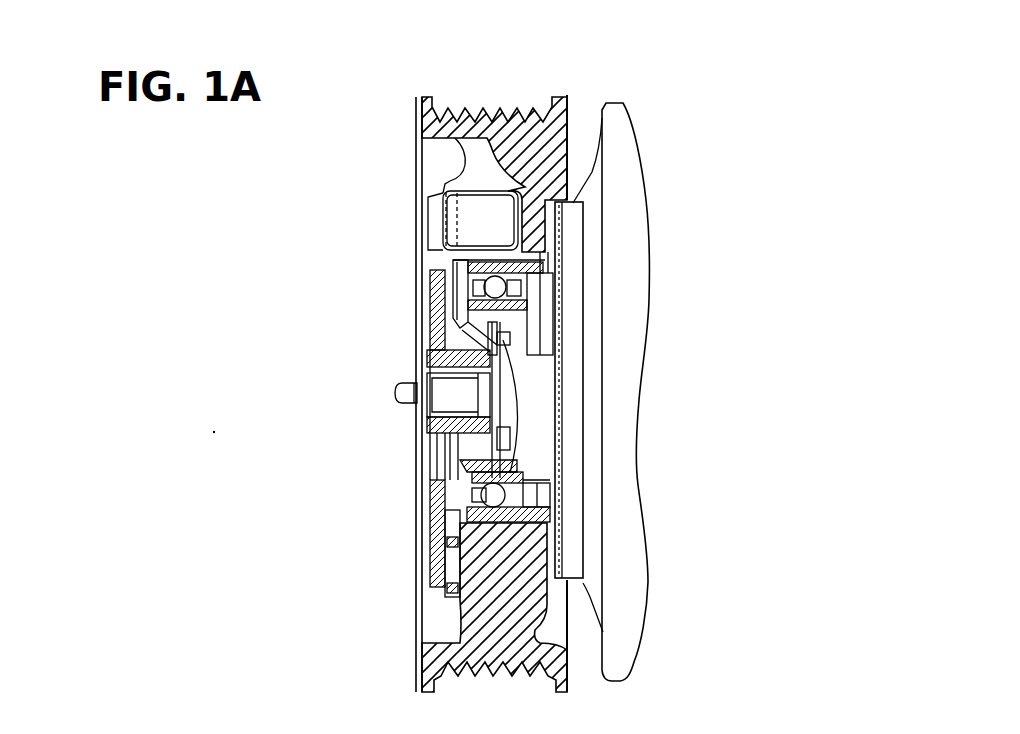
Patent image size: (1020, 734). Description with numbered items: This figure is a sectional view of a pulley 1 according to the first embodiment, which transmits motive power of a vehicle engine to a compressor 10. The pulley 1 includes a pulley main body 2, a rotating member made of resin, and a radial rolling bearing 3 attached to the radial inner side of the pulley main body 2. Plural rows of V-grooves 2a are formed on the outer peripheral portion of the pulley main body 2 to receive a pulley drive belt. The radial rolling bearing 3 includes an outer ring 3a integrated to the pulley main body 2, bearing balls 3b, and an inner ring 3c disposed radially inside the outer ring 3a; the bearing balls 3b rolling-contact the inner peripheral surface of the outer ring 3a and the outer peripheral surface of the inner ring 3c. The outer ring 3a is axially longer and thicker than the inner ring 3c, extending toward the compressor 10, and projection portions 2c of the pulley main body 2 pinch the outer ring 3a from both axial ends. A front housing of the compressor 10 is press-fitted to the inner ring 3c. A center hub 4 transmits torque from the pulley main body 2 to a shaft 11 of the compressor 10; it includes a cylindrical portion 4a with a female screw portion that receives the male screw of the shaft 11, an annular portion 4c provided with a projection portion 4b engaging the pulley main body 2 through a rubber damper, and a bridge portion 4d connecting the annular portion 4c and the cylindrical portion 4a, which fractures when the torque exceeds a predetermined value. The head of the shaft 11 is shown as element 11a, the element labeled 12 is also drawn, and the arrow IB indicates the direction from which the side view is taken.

The pulley 1 is at (436, 95).
The pulley main body 2 is at (552, 381).
The V-grooves 2a is at (492, 108).
The projection portions 2c is at (494, 362).
The radial rolling bearing 3 is at (548, 237).
The outer ring 3a is at (521, 258).
The bearing balls 3b is at (520, 288).
The inner ring 3c is at (525, 318).
The center hub 4 is at (436, 288).
The cylindrical portion 4a is at (447, 433).
The projection portion 4b is at (470, 216).
The annular portion 4c is at (456, 232).
The bridge portion 4d is at (446, 305).
The compressor 10 is at (628, 353).
The shaft 11 is at (417, 400).
The bolt head 11a is at (414, 400).
The shaft 12 is at (520, 320).
The arrow 1B IB is at (375, 392).